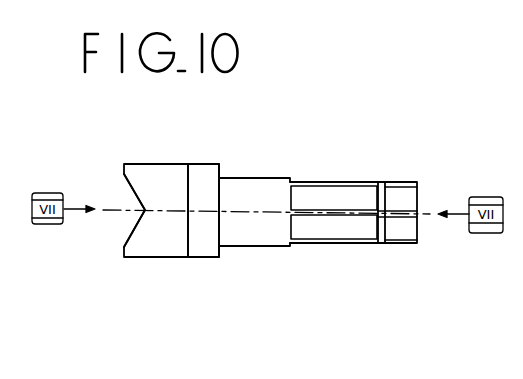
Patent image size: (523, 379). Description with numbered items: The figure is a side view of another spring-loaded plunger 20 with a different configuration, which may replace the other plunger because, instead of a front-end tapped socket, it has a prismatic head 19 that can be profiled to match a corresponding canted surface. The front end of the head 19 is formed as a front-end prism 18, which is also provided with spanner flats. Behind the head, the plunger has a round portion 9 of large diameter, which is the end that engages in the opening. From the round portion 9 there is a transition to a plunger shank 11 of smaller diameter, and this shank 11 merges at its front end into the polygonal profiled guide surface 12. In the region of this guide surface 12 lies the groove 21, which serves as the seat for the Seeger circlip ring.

The round portion 9 is at (207, 242).
The plunger shank 11 is at (272, 236).
The polygonal profiled guide surface 12 is at (333, 234).
The front-end prism 18 is at (137, 197).
The prismatic head 19 is at (140, 248).
The plunger 20 is at (196, 193).
The groove 21 is at (383, 183).